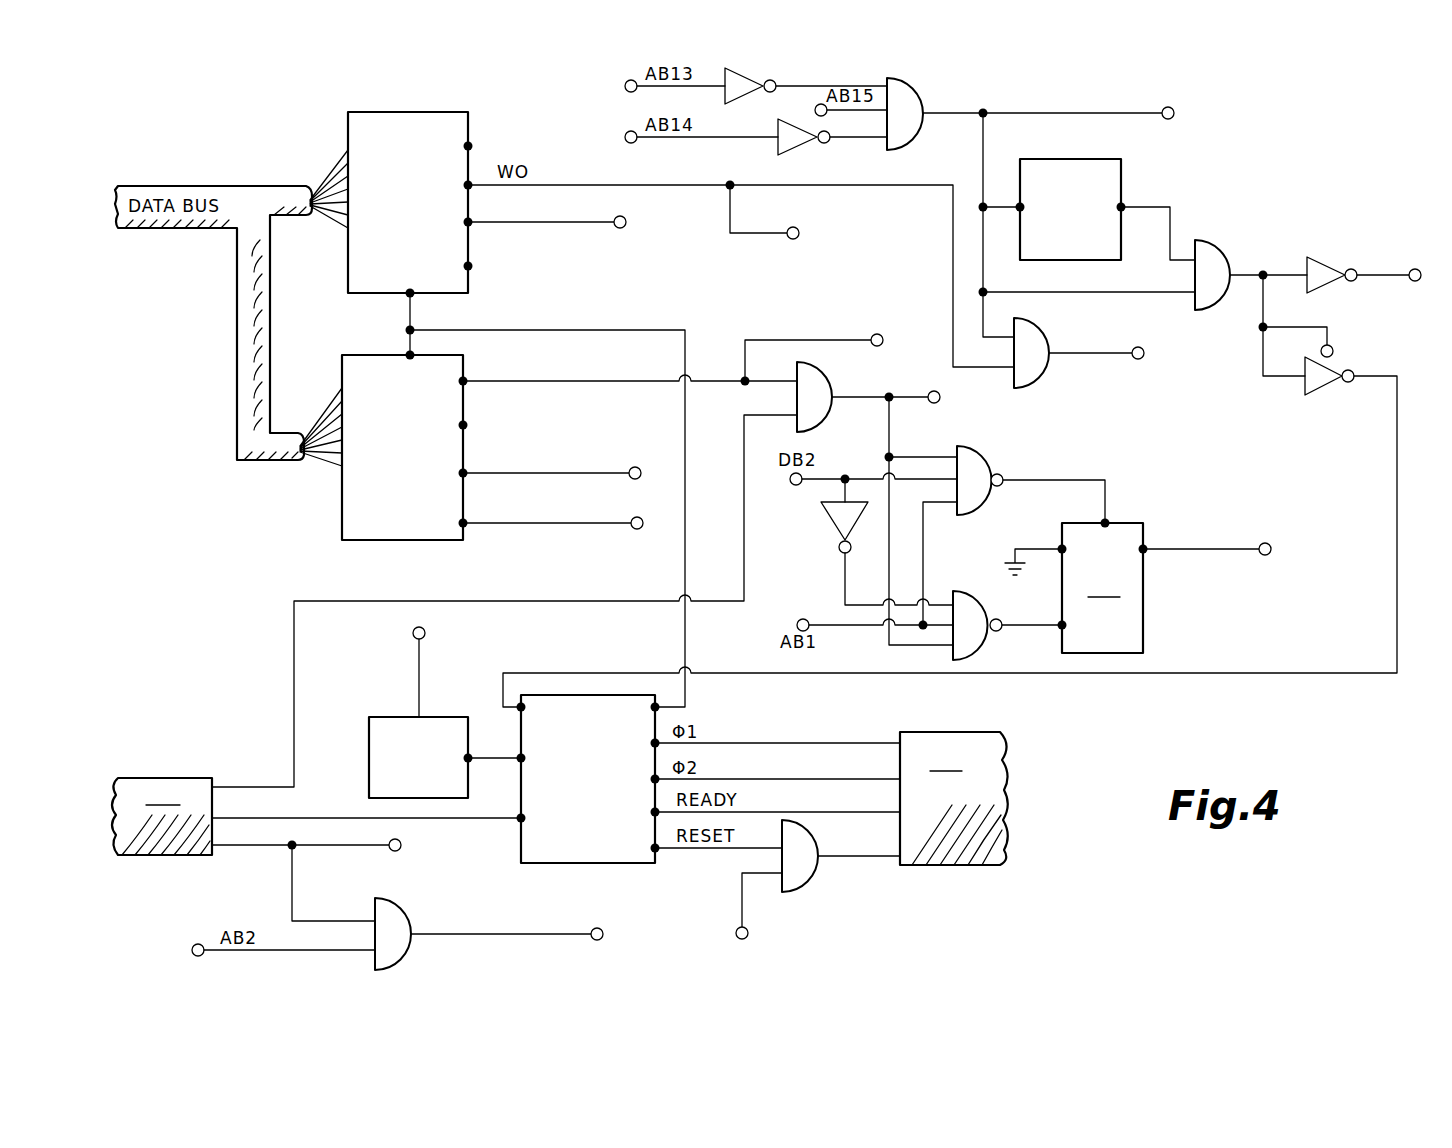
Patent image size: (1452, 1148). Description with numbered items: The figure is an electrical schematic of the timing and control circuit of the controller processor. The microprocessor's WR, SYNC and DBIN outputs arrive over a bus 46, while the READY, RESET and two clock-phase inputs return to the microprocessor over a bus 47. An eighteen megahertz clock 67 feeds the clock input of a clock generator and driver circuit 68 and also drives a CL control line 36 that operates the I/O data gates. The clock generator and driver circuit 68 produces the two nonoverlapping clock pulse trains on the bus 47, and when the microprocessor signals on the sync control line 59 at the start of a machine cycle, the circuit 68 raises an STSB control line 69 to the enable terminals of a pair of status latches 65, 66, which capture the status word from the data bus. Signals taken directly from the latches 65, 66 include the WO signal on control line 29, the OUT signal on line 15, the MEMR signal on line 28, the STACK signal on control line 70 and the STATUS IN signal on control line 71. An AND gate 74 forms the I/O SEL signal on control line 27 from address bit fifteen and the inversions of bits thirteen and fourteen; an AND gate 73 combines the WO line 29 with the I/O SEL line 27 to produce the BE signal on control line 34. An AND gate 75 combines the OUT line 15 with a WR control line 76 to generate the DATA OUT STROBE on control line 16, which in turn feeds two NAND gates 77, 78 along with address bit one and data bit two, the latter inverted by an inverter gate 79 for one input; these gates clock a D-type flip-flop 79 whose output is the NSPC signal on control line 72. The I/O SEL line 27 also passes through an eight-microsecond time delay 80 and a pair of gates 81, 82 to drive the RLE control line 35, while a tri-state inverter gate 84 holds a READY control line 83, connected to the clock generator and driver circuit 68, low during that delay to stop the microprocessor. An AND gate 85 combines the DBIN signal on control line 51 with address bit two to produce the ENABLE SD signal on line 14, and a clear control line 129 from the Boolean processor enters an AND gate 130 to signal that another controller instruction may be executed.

The status latch 65 is at (462, 112).
The status latch 66 is at (342, 362).
The STSB control line 69 is at (645, 326).
The STACK control line 70 is at (624, 228).
The STATUS IN control line 71 is at (640, 466).
The MEMR control line 28 is at (642, 517).
The WO control line 29 is at (799, 233).
The OUT control line 15 is at (882, 333).
The DATA OUT STROBE control line 16 is at (940, 396).
The AND gate 74 is at (923, 82).
The I/O SEL control line 27 is at (1174, 108).
The eight-microsecond time delay 80 is at (1121, 166).
The gate 81 is at (1218, 240).
The gate 82 is at (1320, 257).
The RLE control line 35 is at (1410, 282).
The AND gate 73 is at (1040, 318).
The BE control line 34 is at (1144, 352).
The tri-state inverter gate 84 is at (1305, 398).
The READY control line 83 is at (1397, 458).
The AND gate 75 is at (835, 372).
The WR control line 76 is at (294, 647).
The NAND gate 77 is at (990, 452).
The NAND gate 78 is at (972, 590).
The D-type flip-flop and inverter gate 79 is at (838, 535).
The NSPC control line 72 is at (1271, 546).
The bus 46 is at (162, 816).
The bus 47 is at (954, 798).
The sync control line 59 is at (470, 825).
The DBIN control line 51 is at (399, 851).
The 18 megahertz clock 67 is at (369, 717).
The CL control line 36 is at (425, 633).
The clock generator and driver circuit 68 is at (628, 866).
The AND gate 130 is at (816, 878).
The clear control line 129 is at (748, 933).
The AND gate 85 is at (412, 948).
The ENABLE SD control line 14 is at (603, 934).